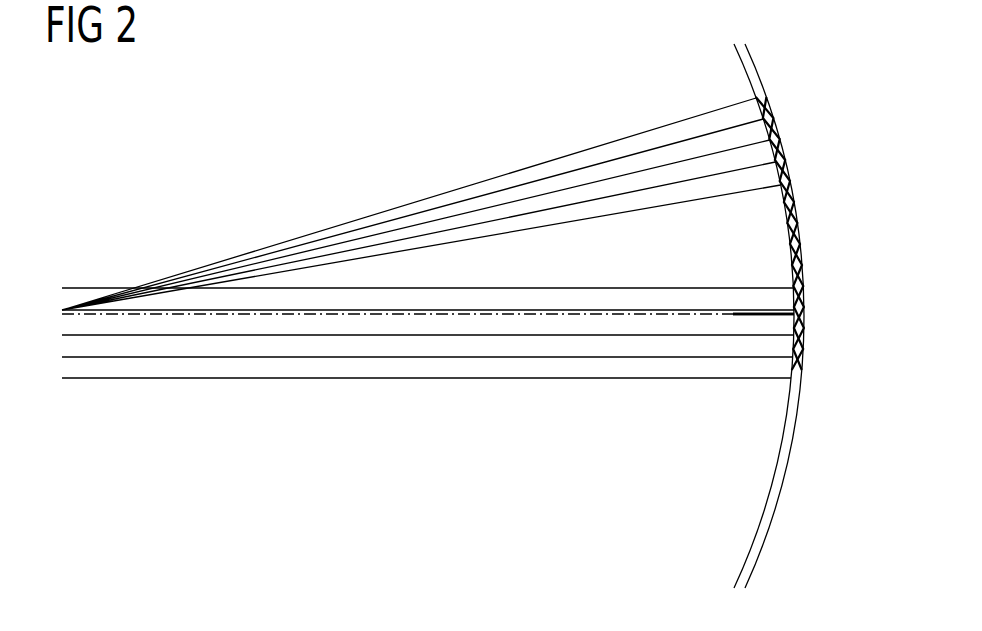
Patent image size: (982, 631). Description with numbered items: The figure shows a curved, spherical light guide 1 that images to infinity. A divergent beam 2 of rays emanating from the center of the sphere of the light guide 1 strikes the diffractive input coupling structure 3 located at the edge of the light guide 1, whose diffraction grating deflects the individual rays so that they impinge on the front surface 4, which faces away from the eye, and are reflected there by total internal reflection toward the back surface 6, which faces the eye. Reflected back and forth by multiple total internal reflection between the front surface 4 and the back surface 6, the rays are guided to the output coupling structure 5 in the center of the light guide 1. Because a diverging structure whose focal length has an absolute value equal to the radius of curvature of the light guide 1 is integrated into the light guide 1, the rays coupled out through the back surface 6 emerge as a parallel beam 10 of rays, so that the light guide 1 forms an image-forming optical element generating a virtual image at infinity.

The light guide 1 is at (748, 62).
The divergent beam of rays 2 is at (483, 190).
The diffractive input coupling structure 3 is at (761, 131).
The front surface 4 is at (787, 492).
The diffractive output coupling structure 5 is at (790, 345).
The back surface 6 is at (759, 515).
The parallel beam of rays 10 is at (370, 370).